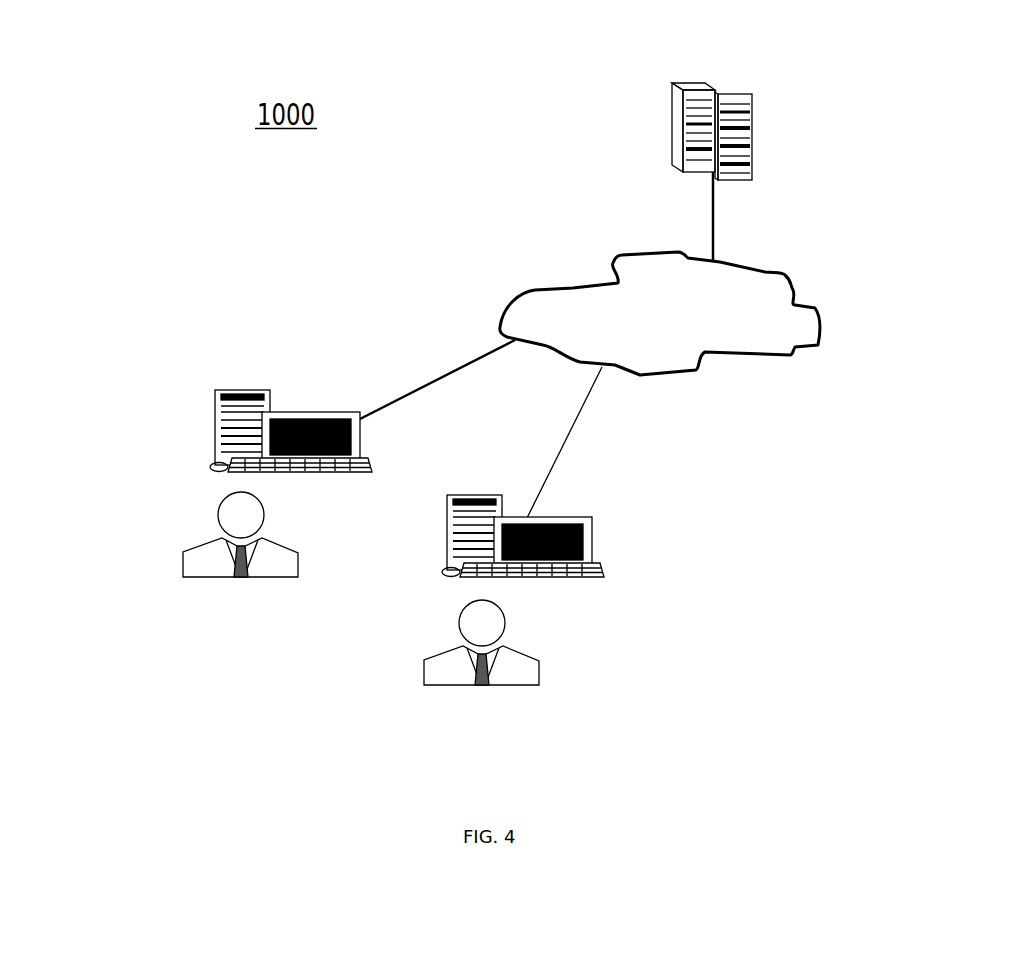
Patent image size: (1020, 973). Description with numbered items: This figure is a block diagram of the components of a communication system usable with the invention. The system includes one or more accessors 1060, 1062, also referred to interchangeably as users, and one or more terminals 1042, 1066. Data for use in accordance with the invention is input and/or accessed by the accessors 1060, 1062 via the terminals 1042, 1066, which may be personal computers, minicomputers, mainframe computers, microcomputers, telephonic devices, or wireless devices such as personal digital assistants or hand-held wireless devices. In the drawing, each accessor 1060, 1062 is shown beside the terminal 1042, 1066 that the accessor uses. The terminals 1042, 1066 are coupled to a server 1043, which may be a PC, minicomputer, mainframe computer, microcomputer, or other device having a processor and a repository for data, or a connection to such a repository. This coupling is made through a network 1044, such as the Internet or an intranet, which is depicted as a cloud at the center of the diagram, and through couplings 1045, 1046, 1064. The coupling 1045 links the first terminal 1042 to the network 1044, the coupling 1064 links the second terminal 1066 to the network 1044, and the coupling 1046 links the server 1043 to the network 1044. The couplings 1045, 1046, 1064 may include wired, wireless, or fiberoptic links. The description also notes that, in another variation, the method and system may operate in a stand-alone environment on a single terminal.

The terminal 1042 is at (218, 392).
The server 1043 is at (743, 93).
The network 1044 is at (615, 280).
The coupling 1045 is at (438, 377).
The coupling 1046 is at (713, 209).
The accessor 1060 is at (207, 545).
The accessor 1062 is at (540, 665).
The coupling 1064 is at (570, 433).
The terminal 1066 is at (590, 545).